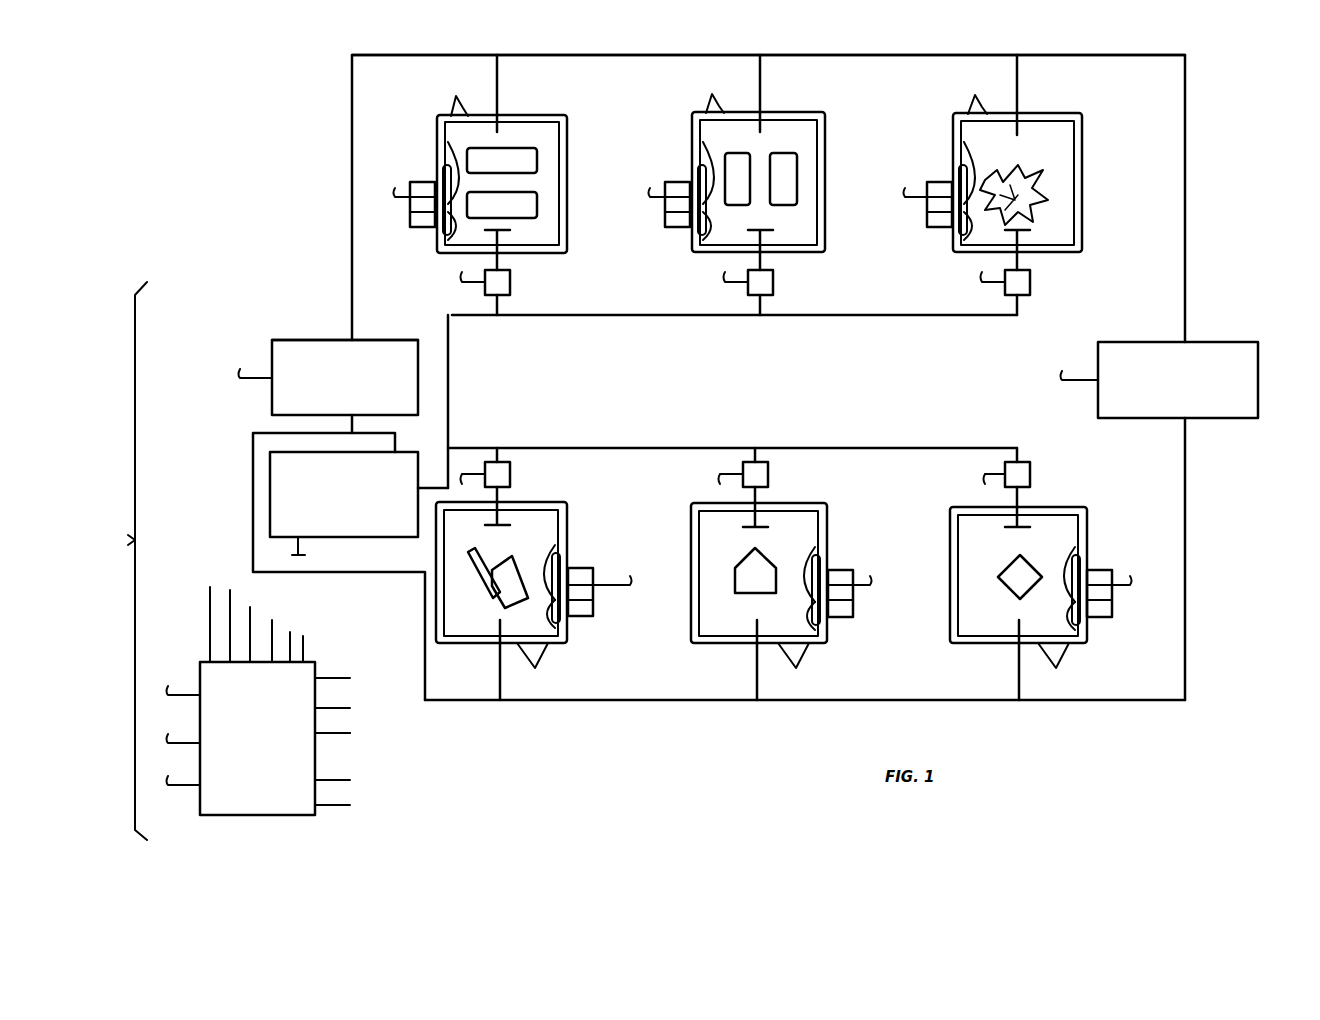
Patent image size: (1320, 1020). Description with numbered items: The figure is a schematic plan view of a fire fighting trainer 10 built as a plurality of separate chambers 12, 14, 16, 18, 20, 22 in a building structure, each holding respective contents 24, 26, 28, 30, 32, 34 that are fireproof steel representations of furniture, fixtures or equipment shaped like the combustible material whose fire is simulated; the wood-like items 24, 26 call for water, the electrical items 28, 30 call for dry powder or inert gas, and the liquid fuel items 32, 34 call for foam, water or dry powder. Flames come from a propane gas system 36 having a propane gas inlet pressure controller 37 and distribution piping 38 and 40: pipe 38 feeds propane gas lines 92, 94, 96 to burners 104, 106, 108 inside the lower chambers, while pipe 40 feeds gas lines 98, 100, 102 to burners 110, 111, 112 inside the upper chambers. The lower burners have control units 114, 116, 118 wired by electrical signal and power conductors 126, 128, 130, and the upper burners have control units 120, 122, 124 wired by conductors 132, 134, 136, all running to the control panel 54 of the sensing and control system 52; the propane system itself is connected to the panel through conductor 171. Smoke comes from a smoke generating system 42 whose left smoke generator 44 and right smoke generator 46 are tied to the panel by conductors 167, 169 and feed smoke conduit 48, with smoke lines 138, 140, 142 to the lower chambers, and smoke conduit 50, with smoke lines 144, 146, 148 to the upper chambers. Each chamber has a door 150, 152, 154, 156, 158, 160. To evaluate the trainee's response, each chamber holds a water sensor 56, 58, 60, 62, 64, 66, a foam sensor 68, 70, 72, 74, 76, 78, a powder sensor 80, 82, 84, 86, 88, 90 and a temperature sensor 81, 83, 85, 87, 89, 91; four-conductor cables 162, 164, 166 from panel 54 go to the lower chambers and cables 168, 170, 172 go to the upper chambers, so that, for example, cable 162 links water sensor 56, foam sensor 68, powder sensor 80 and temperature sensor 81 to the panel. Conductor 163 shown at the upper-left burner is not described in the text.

The fire fighting trainer 10 is at (1205, 62).
The chamber 12 is at (548, 520).
The chamber 14 is at (808, 520).
The chamber 16 is at (1060, 520).
The chamber 18 is at (571, 231).
The chamber 20 is at (820, 237).
The chamber 22 is at (1065, 240).
The contents 24 is at (482, 596).
The contents 26 is at (750, 594).
The contents 28 is at (1012, 592).
The contents 30 is at (550, 187).
The contents 32 is at (790, 157).
The contents 34 is at (1028, 167).
The propane gas system 36 is at (378, 542).
The propane gas inlet pressure controller 37 is at (380, 452).
The distribution piping 38 is at (725, 444).
The distribution piping 40 is at (658, 315).
The smoke generating system 42 is at (318, 325).
The left smoke generator 44 is at (279, 335).
The right smoke generator 46 is at (1098, 404).
The smoke conduit 48 is at (610, 702).
The smoke conduit 50 is at (703, 55).
The sensing and control system 52 is at (375, 814).
The control panel 54 is at (200, 823).
The water sensor 56 is at (560, 638).
The water sensor 58 is at (818, 638).
The water sensor 60 is at (1078, 638).
The water sensor 62 is at (440, 250).
The water sensor 64 is at (700, 250).
The water sensor 66 is at (960, 250).
The foam sensor 68 is at (562, 540).
The foam sensor 70 is at (822, 542).
The foam sensor 72 is at (1082, 542).
The foam sensor 74 is at (448, 147).
The foam sensor 76 is at (706, 147).
The foam sensor 78 is at (959, 147).
The powder sensor 80 is at (563, 556).
The temperature sensor 81 is at (562, 618).
The powder sensor 82 is at (818, 558).
The temperature sensor 83 is at (823, 621).
The powder sensor 84 is at (1088, 543).
The temperature sensor 85 is at (1078, 621).
The powder sensor 86 is at (443, 162).
The temperature sensor 87 is at (445, 238).
The powder sensor 88 is at (700, 161).
The temperature sensor 89 is at (703, 236).
The powder sensor 90 is at (961, 161).
The temperature sensor 91 is at (950, 234).
The propane gas line 92 is at (510, 462).
The propane gas line 94 is at (780, 462).
The propane gas line 96 is at (1030, 450).
The propane gas line 98 is at (502, 308).
The propane gas line 100 is at (770, 308).
The propane gas line 102 is at (1024, 308).
The burner 104 is at (503, 526).
The burner 106 is at (763, 527).
The burner 108 is at (1021, 527).
The burner 110 is at (503, 232).
The burner 111 is at (764, 220).
The burner 112 is at (1016, 226).
The control unit 114 is at (510, 490).
The control unit 116 is at (775, 486).
The control unit 118 is at (1035, 470).
The control unit 120 is at (509, 284).
The control unit 122 is at (775, 284).
The control unit 124 is at (1033, 284).
The electrical signal and power conductor 126 is at (455, 476).
The electrical signal and power conductor 128 is at (698, 476).
The electrical signal and power conductor 130 is at (972, 476).
The electrical signal and power conductor 132 is at (445, 281).
The electrical signal and power conductor 134 is at (716, 283).
The electrical signal and power conductor 136 is at (966, 283).
The smoke line 138 is at (498, 675).
The smoke line 140 is at (757, 677).
The smoke line 142 is at (1016, 677).
The smoke line 144 is at (502, 96).
The smoke line 146 is at (765, 96).
The smoke line 148 is at (1017, 95).
The door 150 is at (540, 657).
The door 152 is at (793, 657).
The door 154 is at (1048, 657).
The door 156 is at (455, 112).
The door 158 is at (709, 104).
The door 160 is at (952, 104).
The cable 162 is at (619, 590).
The burner control line 163 is at (393, 200).
The cable 164 is at (875, 590).
The cable 166 is at (1130, 583).
The electrical signal and power conductor 167 is at (255, 374).
The cable 168 is at (274, 626).
The electrical signal and power conductor 169 is at (1070, 374).
The cable 170 is at (648, 200).
The electrical signal and power conductor 171 is at (300, 544).
The cable 172 is at (900, 200).